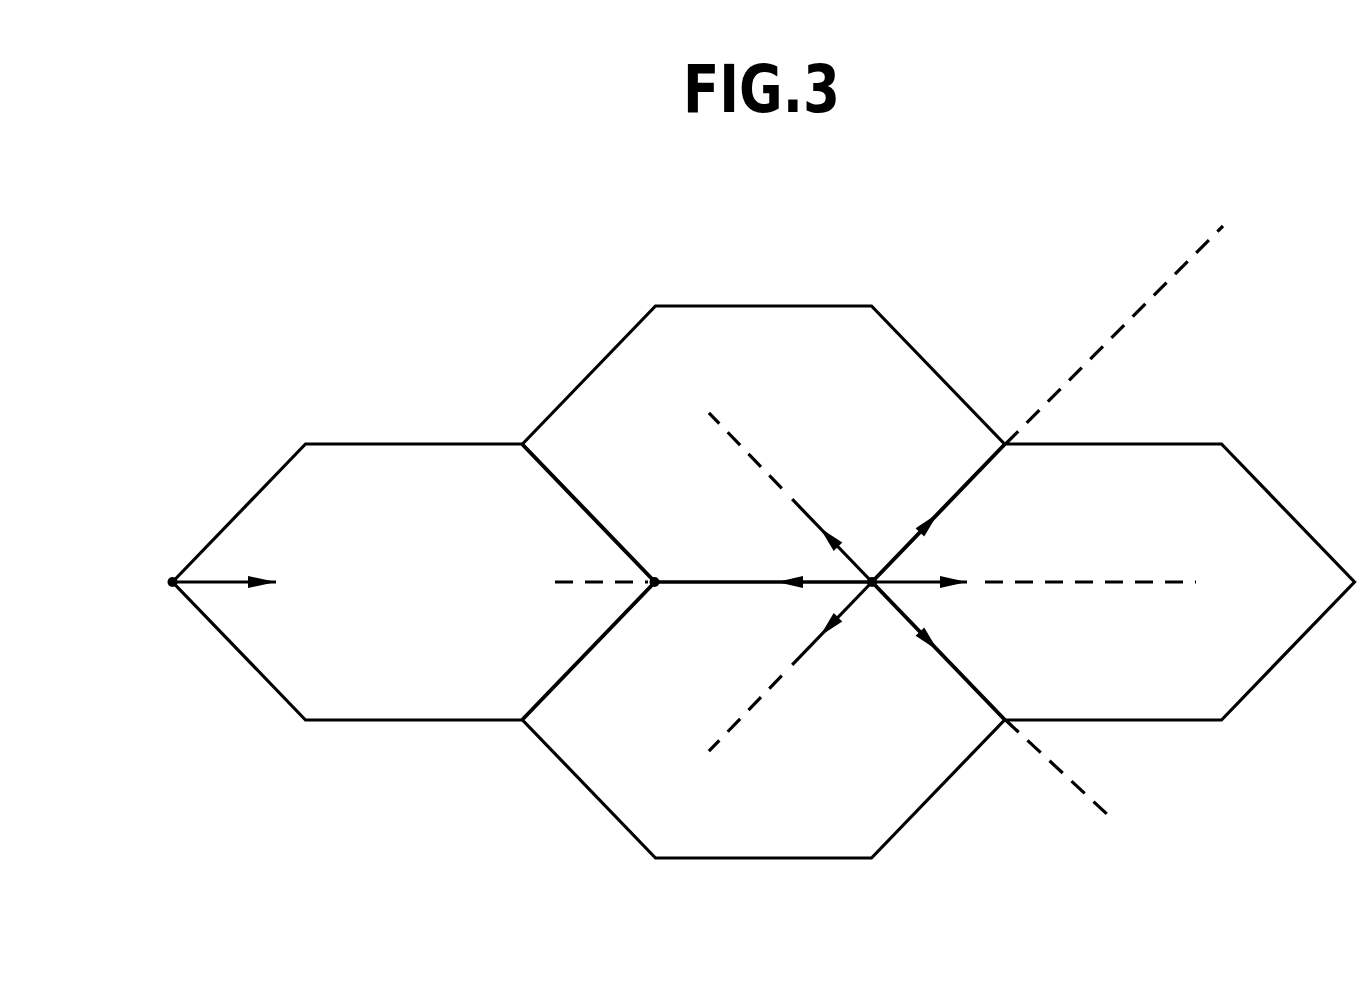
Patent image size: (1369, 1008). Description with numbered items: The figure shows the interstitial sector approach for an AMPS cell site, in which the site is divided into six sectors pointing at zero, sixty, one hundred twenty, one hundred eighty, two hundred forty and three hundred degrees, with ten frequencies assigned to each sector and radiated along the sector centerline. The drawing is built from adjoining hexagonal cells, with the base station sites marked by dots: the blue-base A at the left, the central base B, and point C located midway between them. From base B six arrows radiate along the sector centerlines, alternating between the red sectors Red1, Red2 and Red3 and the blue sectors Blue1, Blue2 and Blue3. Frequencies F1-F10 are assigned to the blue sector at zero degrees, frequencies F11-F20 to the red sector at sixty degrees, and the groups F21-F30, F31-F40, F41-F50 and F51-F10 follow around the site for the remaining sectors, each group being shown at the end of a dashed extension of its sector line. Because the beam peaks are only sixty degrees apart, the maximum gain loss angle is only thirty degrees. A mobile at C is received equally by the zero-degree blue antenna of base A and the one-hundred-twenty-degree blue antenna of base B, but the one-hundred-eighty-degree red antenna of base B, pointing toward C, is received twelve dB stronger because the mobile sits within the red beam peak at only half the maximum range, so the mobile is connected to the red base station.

The blue-base A is at (206, 561).
The base B is at (865, 535).
The mobile location C is at (658, 552).
The red sector Red1 is at (1069, 381).
The red sector Red2 is at (773, 561).
The red sector Red3 is at (1012, 706).
The blue sector Blue1 is at (1034, 562).
The blue sector Blue2 is at (790, 497).
The blue sector Blue3 is at (790, 666).
The frequency group F1 to F10 F1-F10 is at (1260, 586).
The frequency group F11 to F20 F11-F20 is at (1283, 207).
The frequency group F21 to F30 F21-F30 is at (706, 389).
The frequency group F31 to F40 F31-F40 is at (531, 587).
The frequency group F41 to F50 F41-F50 is at (703, 779).
The frequency group F51 to F60 F51-F10 is at (1178, 837).